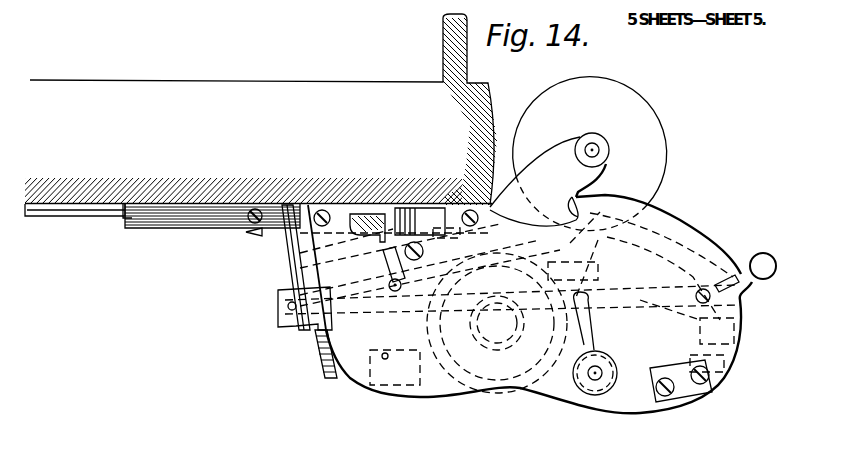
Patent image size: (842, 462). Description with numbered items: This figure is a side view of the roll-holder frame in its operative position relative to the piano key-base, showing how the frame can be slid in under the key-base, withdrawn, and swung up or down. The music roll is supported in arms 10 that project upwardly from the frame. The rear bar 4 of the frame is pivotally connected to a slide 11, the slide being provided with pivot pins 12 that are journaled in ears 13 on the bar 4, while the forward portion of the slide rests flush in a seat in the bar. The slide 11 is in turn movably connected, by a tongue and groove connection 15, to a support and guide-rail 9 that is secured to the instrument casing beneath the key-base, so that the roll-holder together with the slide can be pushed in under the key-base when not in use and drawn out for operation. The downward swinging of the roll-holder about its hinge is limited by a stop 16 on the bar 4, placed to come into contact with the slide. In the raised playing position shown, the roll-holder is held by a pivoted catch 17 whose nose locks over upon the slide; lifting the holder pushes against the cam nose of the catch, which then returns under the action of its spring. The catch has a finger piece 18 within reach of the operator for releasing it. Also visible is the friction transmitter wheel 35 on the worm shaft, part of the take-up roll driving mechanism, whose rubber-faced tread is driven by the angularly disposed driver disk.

The rear bar 4 is at (383, 241).
The support and guide-rail 9 is at (110, 217).
The arms 10 is at (590, 154).
The slide 11 is at (192, 228).
The pivot pins 12 is at (252, 234).
The ears 13 is at (268, 228).
The tongue and groove connection 15 is at (124, 212).
The stop 16 is at (244, 236).
The catch 17 is at (383, 212).
The finger piece 18 is at (421, 221).
The friction transmitter wheel 35 is at (318, 340).